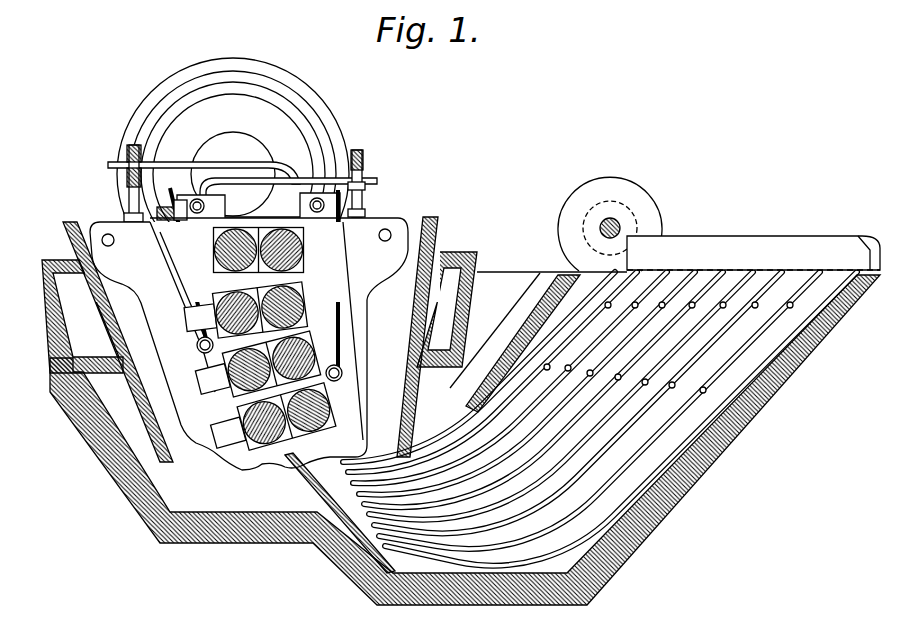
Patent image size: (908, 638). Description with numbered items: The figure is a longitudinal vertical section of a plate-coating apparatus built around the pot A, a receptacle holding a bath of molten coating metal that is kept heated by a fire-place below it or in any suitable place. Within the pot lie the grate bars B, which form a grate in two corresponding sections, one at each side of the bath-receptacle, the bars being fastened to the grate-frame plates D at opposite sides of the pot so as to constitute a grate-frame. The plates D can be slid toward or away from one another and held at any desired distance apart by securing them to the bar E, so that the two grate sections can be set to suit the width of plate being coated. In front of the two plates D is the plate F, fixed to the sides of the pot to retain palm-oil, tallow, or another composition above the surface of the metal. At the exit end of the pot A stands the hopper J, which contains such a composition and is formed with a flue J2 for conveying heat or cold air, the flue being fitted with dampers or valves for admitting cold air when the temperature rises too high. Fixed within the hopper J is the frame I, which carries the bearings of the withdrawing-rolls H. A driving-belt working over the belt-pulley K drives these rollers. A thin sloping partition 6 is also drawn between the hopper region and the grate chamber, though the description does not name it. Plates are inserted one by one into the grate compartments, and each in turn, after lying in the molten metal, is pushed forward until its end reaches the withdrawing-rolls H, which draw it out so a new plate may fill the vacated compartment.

The pot A is at (465, 440).
The grate bars B is at (517, 384).
The grate-frame plates D is at (652, 401).
The bar E is at (569, 224).
The plate F is at (523, 343).
The withdrawing-rolls H is at (259, 343).
The frame I is at (256, 331).
The hopper J is at (250, 343).
The flue J2 is at (259, 312).
The belt-pulley K is at (233, 174).
The partition plate 6 is at (340, 513).